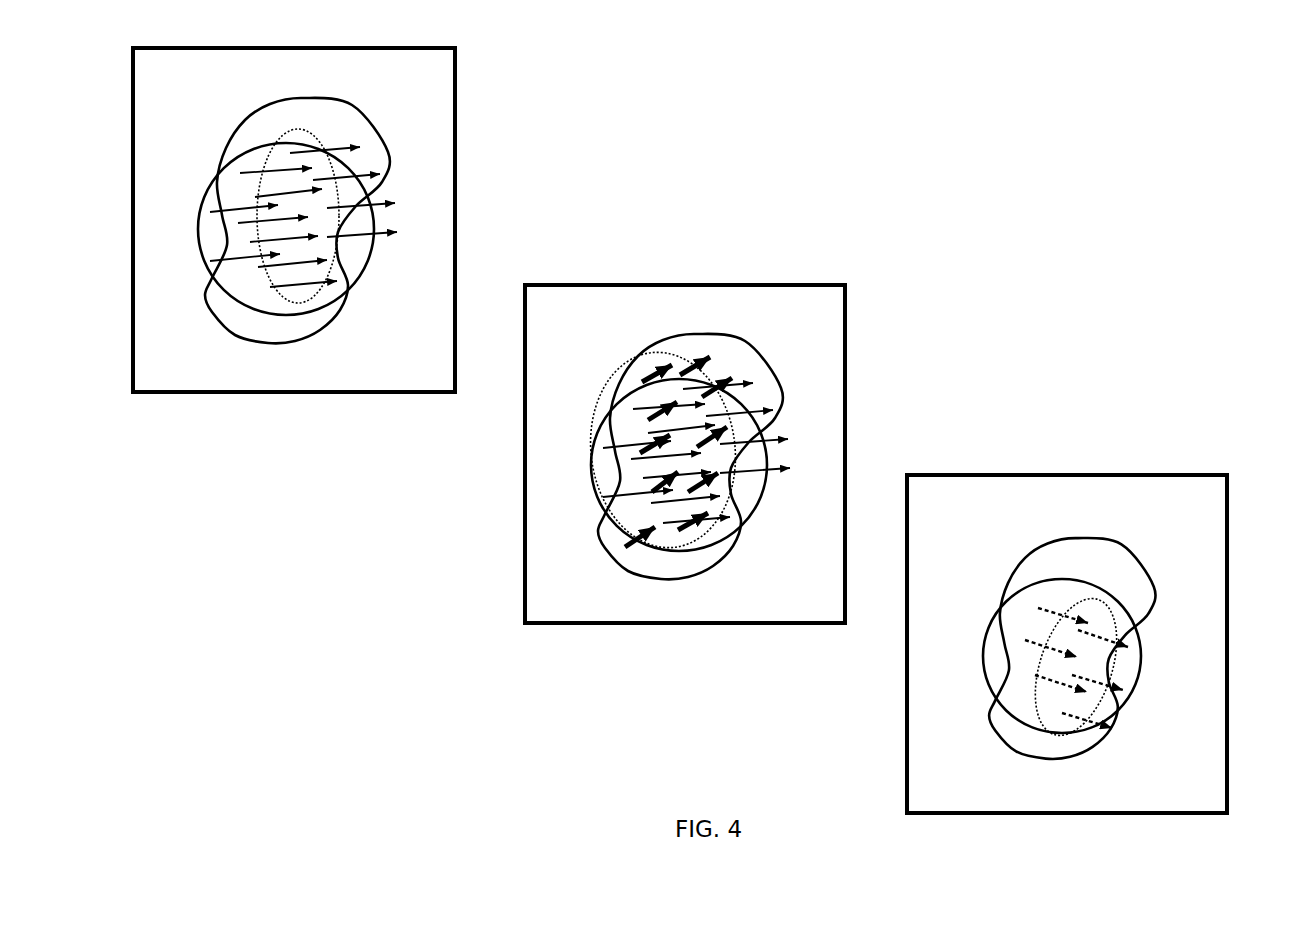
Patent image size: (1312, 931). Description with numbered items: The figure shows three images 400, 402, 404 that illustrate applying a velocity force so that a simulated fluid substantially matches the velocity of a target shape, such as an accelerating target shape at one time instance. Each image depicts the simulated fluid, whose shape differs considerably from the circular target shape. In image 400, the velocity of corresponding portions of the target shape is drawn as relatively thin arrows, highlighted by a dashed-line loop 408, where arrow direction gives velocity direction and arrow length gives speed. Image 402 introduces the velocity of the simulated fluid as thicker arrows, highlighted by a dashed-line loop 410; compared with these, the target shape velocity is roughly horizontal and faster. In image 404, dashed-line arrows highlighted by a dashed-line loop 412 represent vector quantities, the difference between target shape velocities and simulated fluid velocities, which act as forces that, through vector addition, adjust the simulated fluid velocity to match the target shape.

The image 400 is at (455, 103).
The image 402 is at (847, 321).
The image 404 is at (1229, 513).
The dashed-line loop 408 is at (284, 134).
The dashed-line loop 410 is at (667, 432).
The dashed-line loop 412 is at (1082, 603).